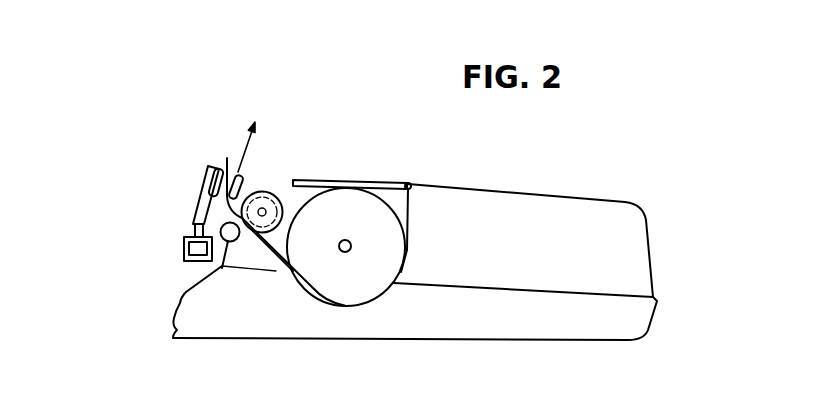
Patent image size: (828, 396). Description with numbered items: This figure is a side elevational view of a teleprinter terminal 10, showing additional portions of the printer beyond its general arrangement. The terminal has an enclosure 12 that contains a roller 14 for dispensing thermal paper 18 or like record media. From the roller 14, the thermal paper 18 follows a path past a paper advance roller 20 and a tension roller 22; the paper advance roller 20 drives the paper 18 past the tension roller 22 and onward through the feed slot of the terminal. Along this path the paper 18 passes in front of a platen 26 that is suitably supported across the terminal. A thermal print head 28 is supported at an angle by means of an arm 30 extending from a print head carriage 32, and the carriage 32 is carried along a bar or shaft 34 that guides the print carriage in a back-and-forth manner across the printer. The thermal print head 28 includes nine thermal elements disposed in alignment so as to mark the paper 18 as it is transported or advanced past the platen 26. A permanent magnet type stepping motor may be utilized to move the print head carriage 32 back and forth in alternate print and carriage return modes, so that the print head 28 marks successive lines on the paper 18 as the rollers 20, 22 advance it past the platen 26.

The teleprinter terminal 10 is at (415, 235).
The enclosure 12 is at (571, 263).
The roller 14 is at (358, 287).
The thermal paper 18 is at (240, 155).
The paper advance roller 20 is at (268, 192).
The tension roller 22 is at (233, 241).
The platen 26 is at (243, 177).
The thermal print head 28 is at (227, 162).
The arm 30 is at (197, 213).
The print head carriage 32 is at (183, 248).
The bar or shaft 34 is at (198, 257).